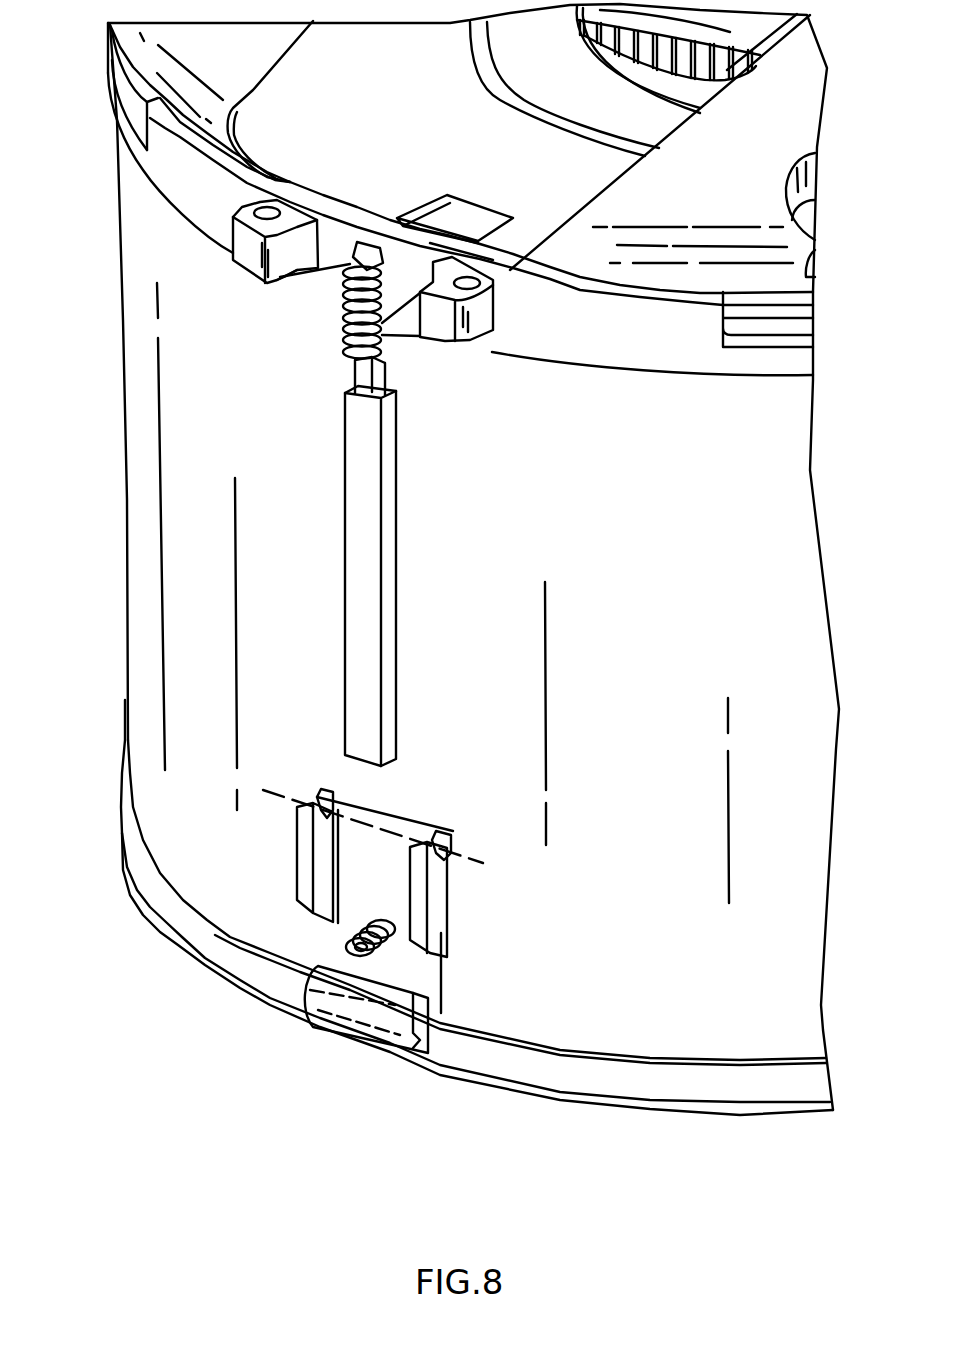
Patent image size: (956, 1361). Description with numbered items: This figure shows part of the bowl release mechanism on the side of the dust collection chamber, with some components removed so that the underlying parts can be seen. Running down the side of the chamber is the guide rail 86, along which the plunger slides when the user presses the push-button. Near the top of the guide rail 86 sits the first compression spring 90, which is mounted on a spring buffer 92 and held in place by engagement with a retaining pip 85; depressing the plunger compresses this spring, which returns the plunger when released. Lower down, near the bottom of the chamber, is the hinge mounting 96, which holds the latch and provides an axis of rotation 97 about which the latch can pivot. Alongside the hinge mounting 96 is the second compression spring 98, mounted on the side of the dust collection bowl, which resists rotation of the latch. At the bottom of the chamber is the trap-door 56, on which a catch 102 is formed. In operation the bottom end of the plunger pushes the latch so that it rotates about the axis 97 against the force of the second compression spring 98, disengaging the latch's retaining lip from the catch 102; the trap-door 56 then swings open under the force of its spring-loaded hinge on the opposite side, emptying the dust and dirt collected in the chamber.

The trap-door 56 is at (599, 1057).
The retaining pip 85 is at (350, 267).
The guide rail 86 is at (355, 530).
The first compression spring 90 is at (345, 325).
The spring buffer 92 is at (355, 398).
The hinge mounting 96 is at (317, 790).
The axis of rotation 97 is at (383, 827).
The second compression spring 98 is at (353, 933).
The catch 102 is at (367, 992).